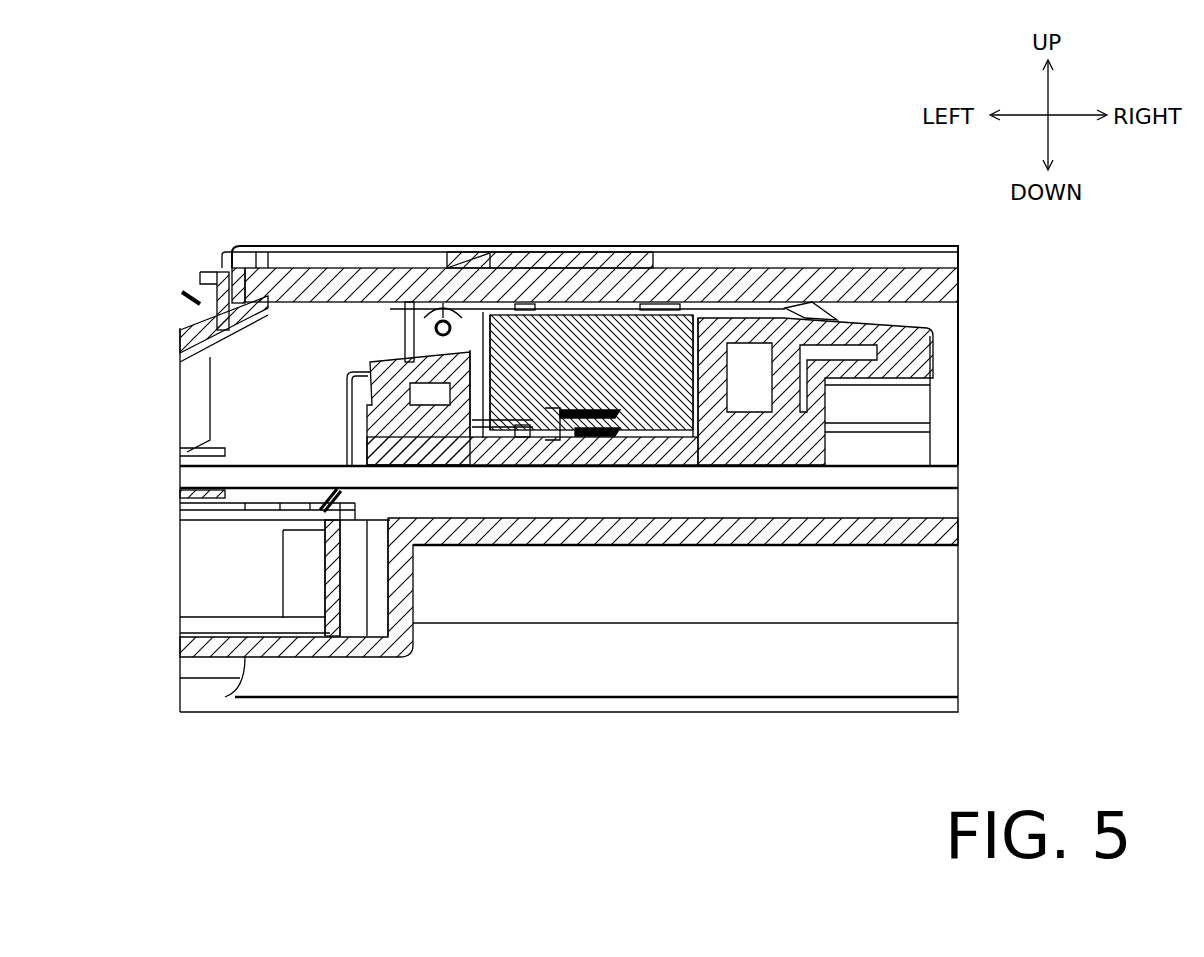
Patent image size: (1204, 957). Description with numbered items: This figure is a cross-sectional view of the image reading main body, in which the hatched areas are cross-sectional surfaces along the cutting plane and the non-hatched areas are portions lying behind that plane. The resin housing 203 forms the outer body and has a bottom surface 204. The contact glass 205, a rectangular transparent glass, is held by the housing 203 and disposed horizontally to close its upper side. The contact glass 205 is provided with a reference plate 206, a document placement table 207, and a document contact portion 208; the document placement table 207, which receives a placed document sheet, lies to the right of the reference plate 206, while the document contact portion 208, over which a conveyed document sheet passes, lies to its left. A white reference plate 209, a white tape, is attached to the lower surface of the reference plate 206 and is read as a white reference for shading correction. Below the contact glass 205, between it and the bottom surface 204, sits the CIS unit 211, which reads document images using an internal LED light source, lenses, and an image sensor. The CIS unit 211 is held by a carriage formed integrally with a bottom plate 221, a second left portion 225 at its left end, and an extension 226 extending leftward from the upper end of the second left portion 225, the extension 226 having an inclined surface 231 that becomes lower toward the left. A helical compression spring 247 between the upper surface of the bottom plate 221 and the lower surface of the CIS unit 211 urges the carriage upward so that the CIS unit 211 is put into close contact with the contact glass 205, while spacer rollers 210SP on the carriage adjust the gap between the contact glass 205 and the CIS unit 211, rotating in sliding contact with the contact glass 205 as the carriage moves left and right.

The housing 203 is at (865, 547).
The bottom surface 204 is at (920, 520).
The contact glass 205 is at (305, 270).
The reference plate 206 is at (628, 268).
The document placement table 207 is at (826, 300).
The document contact portion 208 is at (405, 300).
The white reference plate 209 is at (562, 268).
The spacer rollers 210SP is at (470, 265).
The CIS unit 211 is at (658, 338).
The bottom plate 221 is at (668, 440).
The second left portion 225 is at (462, 440).
The extension 226 is at (400, 364).
The inclined surface 231 is at (370, 302).
The helical compression spring 247 is at (610, 432).